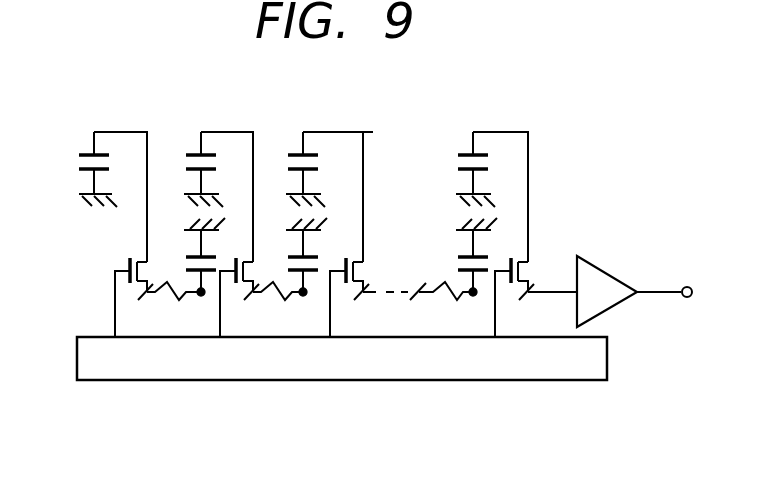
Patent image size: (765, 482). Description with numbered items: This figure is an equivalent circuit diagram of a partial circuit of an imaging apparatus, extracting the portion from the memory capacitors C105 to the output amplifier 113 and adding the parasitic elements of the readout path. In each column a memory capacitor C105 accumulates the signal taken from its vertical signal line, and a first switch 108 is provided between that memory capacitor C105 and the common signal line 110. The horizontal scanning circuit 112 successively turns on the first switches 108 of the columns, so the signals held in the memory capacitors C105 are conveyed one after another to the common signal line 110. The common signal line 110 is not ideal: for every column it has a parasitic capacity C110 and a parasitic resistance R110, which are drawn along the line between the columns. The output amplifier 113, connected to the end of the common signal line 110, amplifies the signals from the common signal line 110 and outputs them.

The memory capacitor C105 is at (90, 152).
The parasitic capacity C110 is at (189, 256).
The first switch 108 is at (128, 263).
The parasitic resistance R110 is at (172, 298).
The common signal line 110 is at (547, 288).
The output amplifier 113 is at (604, 272).
The horizontal scanning circuit 112 is at (607, 356).